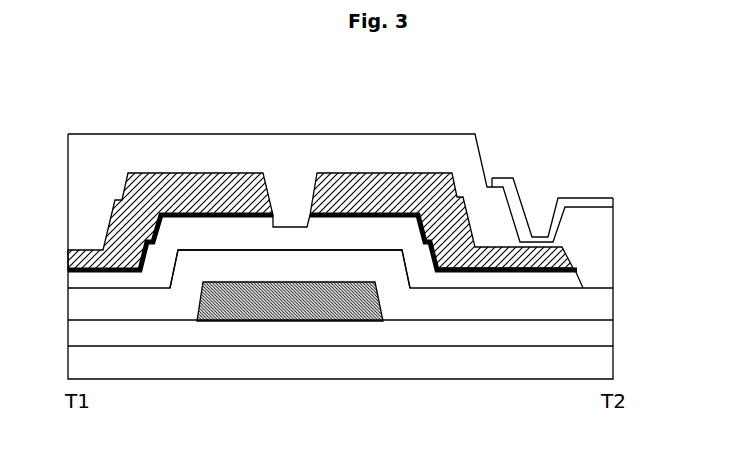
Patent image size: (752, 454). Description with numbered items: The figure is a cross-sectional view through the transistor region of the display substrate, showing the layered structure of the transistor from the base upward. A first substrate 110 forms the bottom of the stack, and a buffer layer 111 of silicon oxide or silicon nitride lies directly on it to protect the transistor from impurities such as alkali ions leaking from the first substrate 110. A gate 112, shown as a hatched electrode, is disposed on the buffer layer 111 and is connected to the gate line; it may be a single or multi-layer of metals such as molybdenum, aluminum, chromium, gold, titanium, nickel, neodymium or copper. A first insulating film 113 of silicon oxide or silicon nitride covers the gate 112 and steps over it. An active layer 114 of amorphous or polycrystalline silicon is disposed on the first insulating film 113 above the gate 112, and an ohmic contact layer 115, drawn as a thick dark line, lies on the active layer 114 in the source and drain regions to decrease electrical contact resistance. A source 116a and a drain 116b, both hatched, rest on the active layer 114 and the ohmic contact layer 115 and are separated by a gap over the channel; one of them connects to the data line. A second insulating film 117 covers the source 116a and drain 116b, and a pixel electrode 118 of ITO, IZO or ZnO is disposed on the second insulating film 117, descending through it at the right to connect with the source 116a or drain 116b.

The first substrate 110 is at (613, 363).
The buffer layer 111 is at (613, 332).
The gate 112 is at (296, 305).
The first insulating film 113 is at (613, 303).
The active layer 114 is at (213, 243).
The ohmic contact layer 115 is at (388, 218).
The source 116a is at (193, 176).
The drain 116b is at (365, 178).
The second insulating film 117 is at (613, 240).
The pixel electrode 118 is at (613, 197).